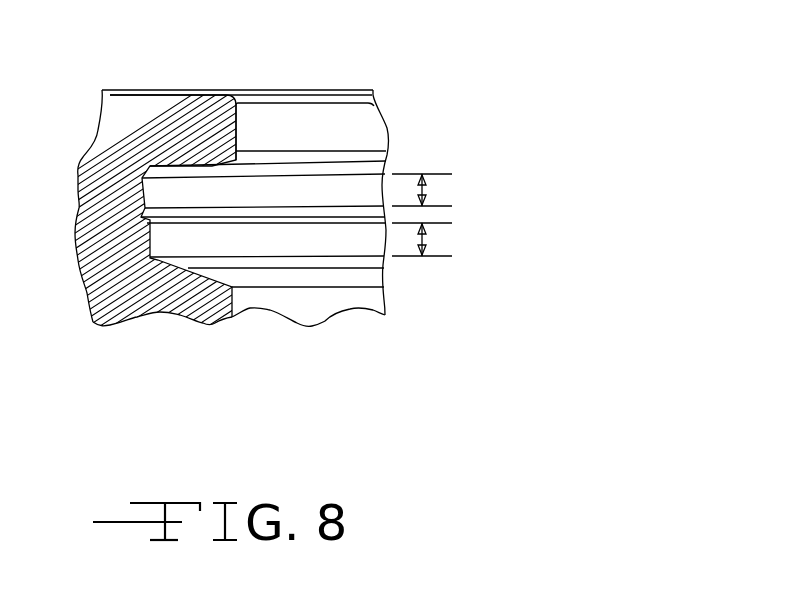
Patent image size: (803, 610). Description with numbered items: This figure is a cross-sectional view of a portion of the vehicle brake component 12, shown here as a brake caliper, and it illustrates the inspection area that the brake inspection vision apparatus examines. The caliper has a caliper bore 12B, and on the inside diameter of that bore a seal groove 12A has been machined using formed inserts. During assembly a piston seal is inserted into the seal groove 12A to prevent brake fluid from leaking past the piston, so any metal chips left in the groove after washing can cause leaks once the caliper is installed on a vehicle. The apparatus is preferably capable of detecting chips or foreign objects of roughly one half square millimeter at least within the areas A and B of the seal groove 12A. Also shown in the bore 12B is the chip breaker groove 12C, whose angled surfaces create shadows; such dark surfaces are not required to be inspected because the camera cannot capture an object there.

The vehicle brake component 12 is at (398, 110).
The seal groove 12A is at (318, 296).
The caliper bore 12B is at (279, 127).
The chip breaker groove 12C is at (140, 213).
The area A of the seal groove A is at (424, 190).
The area B of the seal groove B is at (425, 239).